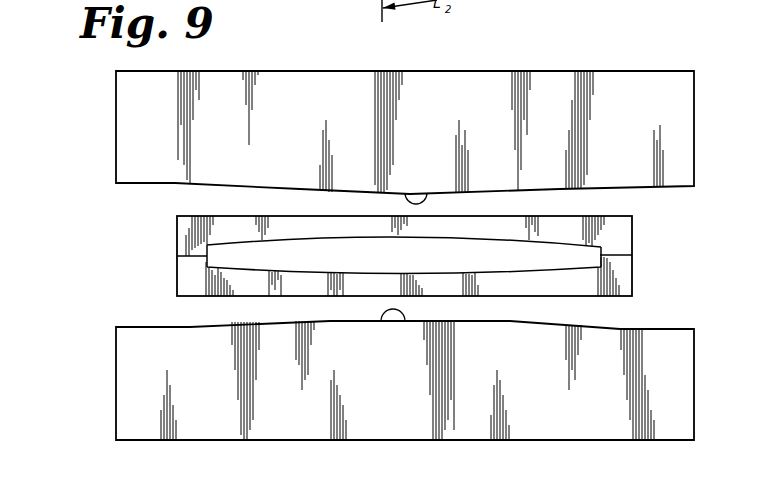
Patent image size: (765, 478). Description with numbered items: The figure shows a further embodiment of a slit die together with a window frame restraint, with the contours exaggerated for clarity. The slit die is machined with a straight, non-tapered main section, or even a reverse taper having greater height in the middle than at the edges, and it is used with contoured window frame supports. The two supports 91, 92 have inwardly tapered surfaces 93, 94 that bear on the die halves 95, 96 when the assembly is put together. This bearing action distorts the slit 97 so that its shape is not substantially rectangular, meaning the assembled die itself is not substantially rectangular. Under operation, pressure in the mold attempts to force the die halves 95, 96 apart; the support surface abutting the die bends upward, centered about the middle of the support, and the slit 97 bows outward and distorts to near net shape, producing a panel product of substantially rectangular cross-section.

The support 91 is at (116, 131).
The support 92 is at (116, 388).
The inwardly tapered surface 93 is at (428, 187).
The inwardly tapered surface 94 is at (384, 312).
The die half 95 is at (632, 235).
The die half 96 is at (632, 277).
The slit 97 is at (465, 257).